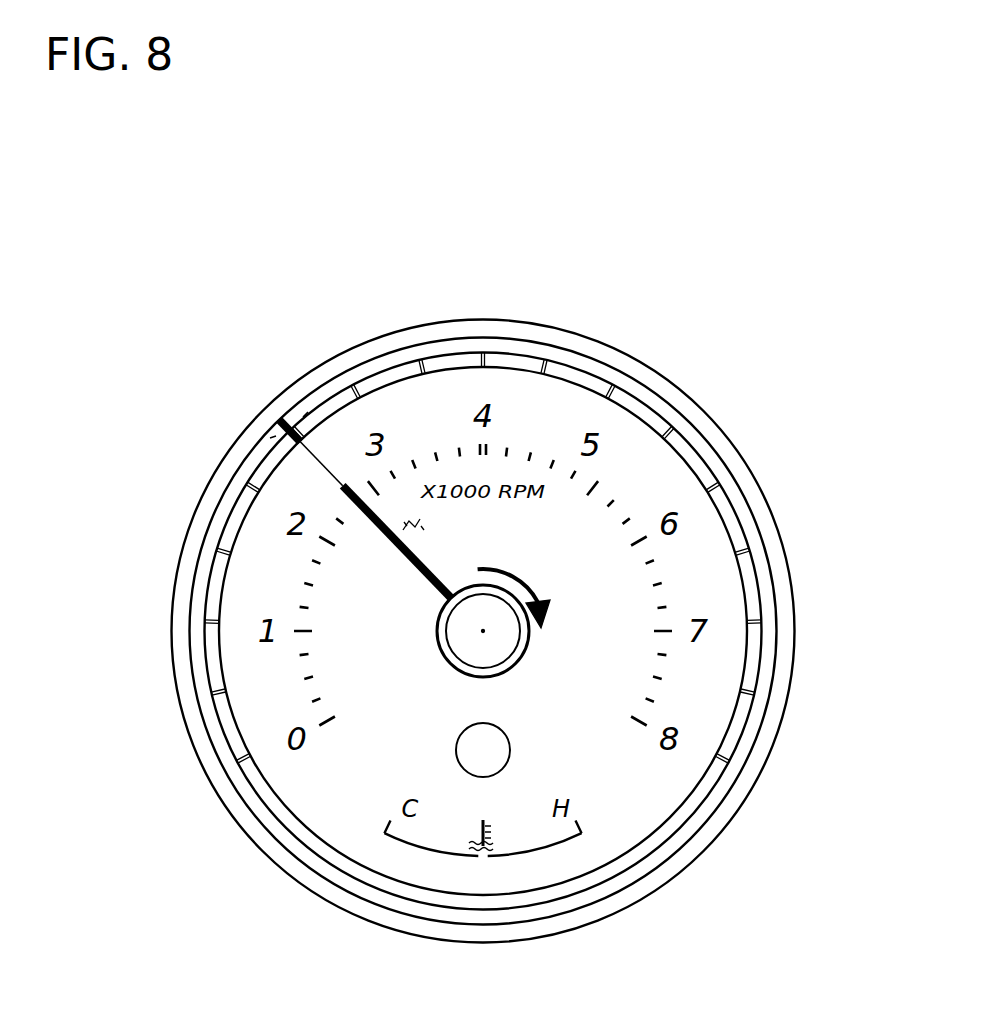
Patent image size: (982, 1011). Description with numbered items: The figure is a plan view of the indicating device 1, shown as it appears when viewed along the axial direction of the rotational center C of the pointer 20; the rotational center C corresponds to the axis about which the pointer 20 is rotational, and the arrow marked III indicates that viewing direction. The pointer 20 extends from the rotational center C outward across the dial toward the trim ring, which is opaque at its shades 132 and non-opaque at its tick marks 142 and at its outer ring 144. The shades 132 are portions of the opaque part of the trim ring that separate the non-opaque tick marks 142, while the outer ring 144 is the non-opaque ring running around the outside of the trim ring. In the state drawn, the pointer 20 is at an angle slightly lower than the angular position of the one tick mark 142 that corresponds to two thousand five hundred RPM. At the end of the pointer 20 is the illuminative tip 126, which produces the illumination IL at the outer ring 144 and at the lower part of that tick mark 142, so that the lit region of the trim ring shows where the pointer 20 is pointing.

The indicating device 1 is at (704, 277).
The pointer 20 is at (507, 660).
The illuminative tip 126 is at (282, 386).
The shades 132 is at (262, 465).
The tick marks 142 is at (277, 413).
The outer ring 144 is at (432, 352).
The rotational center C is at (483, 631).
The illumination IL is at (288, 425).
The viewing direction III is at (483, 291).